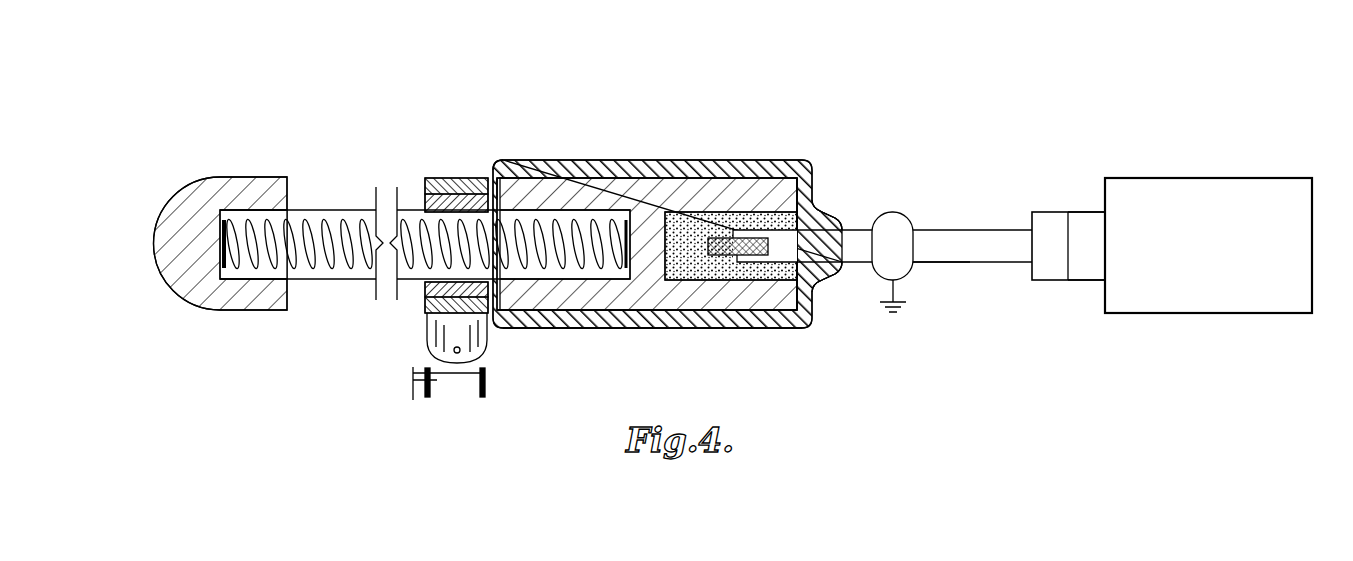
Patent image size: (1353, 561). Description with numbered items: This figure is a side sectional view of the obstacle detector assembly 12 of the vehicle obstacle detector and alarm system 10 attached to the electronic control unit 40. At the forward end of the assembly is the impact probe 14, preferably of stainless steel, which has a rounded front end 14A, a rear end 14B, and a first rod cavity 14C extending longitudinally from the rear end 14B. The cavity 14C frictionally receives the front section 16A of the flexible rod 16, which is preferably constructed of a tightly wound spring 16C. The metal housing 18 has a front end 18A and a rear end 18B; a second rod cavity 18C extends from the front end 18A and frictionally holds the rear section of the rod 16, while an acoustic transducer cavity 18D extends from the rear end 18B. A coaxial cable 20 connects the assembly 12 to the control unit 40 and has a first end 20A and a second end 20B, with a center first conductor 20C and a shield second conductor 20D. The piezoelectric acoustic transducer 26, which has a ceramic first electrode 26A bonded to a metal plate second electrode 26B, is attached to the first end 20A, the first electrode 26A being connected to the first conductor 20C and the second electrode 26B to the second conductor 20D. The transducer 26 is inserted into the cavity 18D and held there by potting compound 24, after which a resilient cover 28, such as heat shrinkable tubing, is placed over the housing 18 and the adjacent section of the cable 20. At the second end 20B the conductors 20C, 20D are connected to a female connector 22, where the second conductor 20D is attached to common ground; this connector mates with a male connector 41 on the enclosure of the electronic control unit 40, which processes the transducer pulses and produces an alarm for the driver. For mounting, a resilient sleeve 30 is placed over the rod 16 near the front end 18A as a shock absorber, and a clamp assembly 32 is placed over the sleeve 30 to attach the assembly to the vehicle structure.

The vehicle obstacle detector and alarm system 10 is at (1280, 116).
The obstacle detector assembly 12 is at (679, 106).
The impact probe 14 is at (175, 208).
The rounded front end 14A is at (162, 265).
The rear end 14B is at (290, 197).
The first rod cavity 14C is at (288, 283).
The flexible rod 16 is at (312, 223).
The front section 16A is at (223, 223).
The tightly wound spring 16C is at (627, 223).
The housing 18 is at (710, 187).
The front end 18A is at (500, 160).
The rear end 18B is at (793, 195).
The second rod cavity 18C is at (547, 207).
The acoustic transducer cavity 18D is at (817, 213).
The coaxial cable 20 is at (895, 213).
The first end 20A is at (745, 262).
The second end 20B is at (1027, 267).
The first conductor 20C is at (952, 232).
The second conductor 20D is at (937, 263).
The female connector 22 is at (1048, 212).
The potting compound 24 is at (702, 265).
The piezoelectric acoustic transducer 26 is at (676, 262).
The first electrode 26A is at (763, 243).
The second electrode 26B is at (684, 262).
The resilient cover 28 is at (532, 327).
The sleeve 30 is at (432, 178).
The clamp assembly 32 is at (448, 178).
The electronic control unit 40 is at (1208, 245).
The male connector 41 is at (1085, 272).